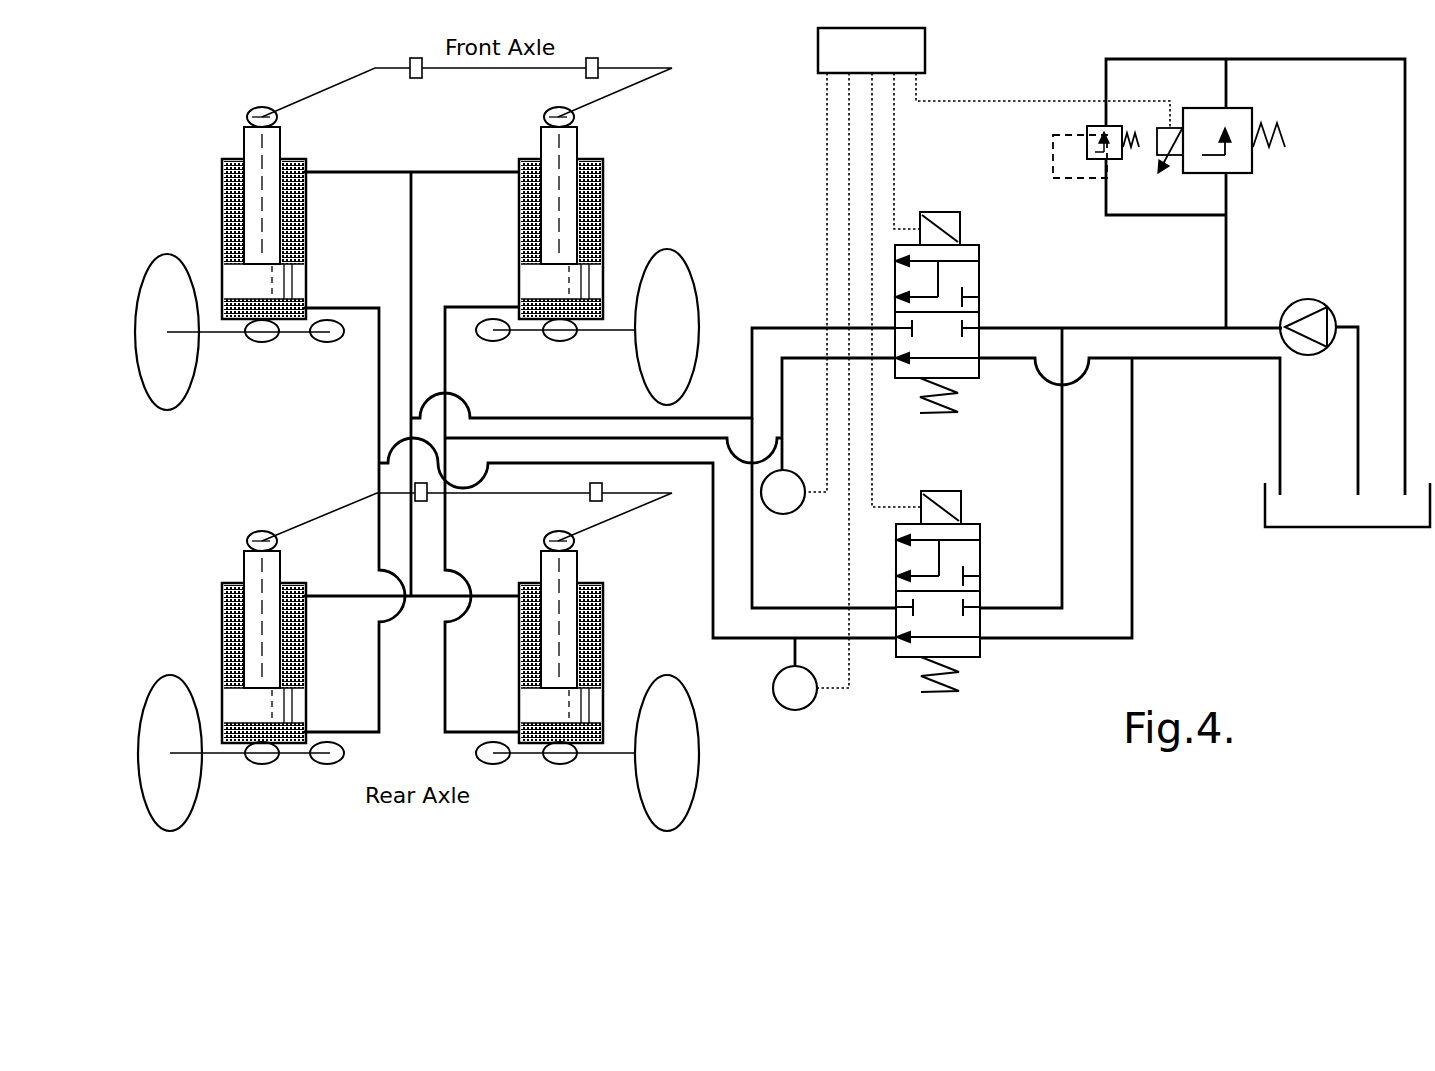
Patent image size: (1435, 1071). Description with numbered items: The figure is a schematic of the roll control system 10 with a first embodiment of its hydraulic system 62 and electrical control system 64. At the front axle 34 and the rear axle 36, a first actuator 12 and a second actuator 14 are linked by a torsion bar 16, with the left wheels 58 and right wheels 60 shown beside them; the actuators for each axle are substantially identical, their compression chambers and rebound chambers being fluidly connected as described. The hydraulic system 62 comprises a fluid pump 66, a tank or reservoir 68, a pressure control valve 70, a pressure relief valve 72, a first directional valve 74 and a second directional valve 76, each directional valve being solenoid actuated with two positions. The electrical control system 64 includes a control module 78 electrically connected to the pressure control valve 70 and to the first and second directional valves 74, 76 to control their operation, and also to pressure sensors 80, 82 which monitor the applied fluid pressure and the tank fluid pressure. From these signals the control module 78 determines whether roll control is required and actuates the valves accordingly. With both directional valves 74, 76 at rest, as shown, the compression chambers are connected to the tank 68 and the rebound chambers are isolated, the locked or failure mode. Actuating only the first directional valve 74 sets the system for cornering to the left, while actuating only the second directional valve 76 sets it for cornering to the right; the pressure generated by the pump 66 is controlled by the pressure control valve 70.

The roll control system 10 is at (795, 797).
The first actuator 12 is at (206, 207).
The second actuator 14 is at (614, 221).
The torsion bar 16 is at (480, 74).
The front axle 34 is at (301, 350).
The rear axle 36 is at (302, 774).
The left wheels 58 is at (185, 380).
The right wheels 60 is at (648, 365).
The hydraulic system 62 is at (1194, 545).
The electrical control system 64 is at (803, 98).
The fluid pump 66 is at (1305, 300).
The tank 68 is at (1342, 515).
The pressure control valve 70 is at (1242, 173).
The pressure relief valve 72 is at (1097, 125).
The first directional valve 74 is at (979, 252).
The second directional valve 76 is at (979, 560).
The control module 78 is at (925, 50).
The pressure sensor 80 is at (790, 514).
The pressure sensor 82 is at (805, 710).